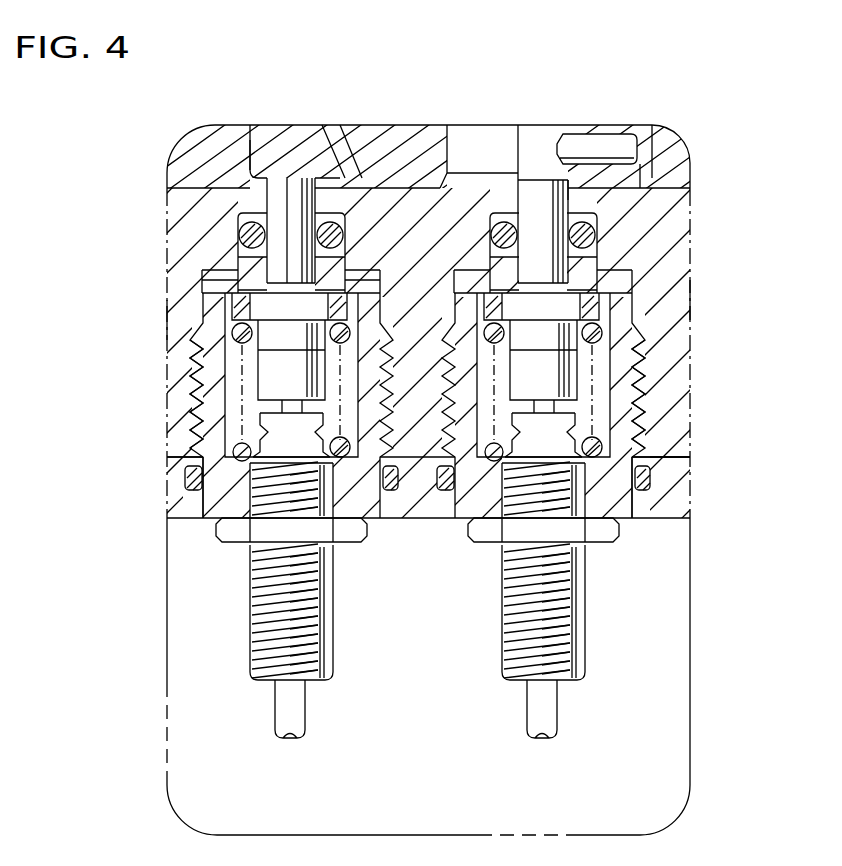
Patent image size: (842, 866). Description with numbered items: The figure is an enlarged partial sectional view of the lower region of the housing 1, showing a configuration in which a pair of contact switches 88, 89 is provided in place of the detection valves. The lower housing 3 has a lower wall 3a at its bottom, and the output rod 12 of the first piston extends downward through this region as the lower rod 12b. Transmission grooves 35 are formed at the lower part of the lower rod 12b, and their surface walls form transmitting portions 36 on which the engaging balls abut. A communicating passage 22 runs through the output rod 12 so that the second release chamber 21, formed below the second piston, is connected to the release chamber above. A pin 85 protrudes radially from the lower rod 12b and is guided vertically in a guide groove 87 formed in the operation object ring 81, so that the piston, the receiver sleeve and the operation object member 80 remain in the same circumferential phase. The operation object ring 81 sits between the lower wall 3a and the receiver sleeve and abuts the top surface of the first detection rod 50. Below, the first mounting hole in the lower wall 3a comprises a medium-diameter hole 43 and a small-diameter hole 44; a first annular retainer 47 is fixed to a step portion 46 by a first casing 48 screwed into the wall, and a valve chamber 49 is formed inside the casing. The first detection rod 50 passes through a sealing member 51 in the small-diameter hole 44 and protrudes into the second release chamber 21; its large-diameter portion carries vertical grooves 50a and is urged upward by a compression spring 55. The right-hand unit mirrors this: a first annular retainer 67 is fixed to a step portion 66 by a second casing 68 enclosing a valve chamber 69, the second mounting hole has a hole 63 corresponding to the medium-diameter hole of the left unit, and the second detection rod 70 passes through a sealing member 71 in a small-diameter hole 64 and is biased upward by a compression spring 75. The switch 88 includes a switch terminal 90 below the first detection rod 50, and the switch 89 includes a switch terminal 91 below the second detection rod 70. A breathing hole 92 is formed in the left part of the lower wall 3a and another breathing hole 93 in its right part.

The housing 1 is at (205, 112).
The lower housing 3 is at (458, 503).
The lower wall 3a is at (672, 485).
The output rod 12 is at (547, 113).
The lower rod 12b is at (517, 140).
The second release chamber 21 is at (342, 165).
The communicating passage 22 is at (470, 165).
The transmission grooves 35 is at (378, 145).
The transmitting portions 36 is at (368, 158).
The medium-diameter hole 43 is at (234, 234).
The small-diameter hole 44 is at (285, 183).
The step portion 46 is at (218, 268).
The first annular retainer 47 is at (223, 283).
The first casing 48 is at (207, 435).
The valve chamber 49 is at (259, 405).
The first detection rod 50 is at (285, 210).
The grooves 50a is at (240, 305).
The sealing member 51 is at (336, 233).
The compression spring 55 is at (190, 462).
The second O-ring 63 is at (618, 229).
The small-diameter hole 64 is at (590, 186).
The step portion 66 is at (618, 267).
The first annular retainer 67 is at (600, 288).
The second casing 68 is at (686, 470).
The valve chamber 69 is at (574, 405).
The second detection rod 70 is at (585, 205).
The sealing member 71 is at (593, 233).
The compression spring 75 is at (591, 471).
The operation object member 80 is at (262, 113).
The operation object ring 81 is at (287, 140).
The pin 85 is at (597, 140).
The guide groove 87 is at (650, 138).
The switch 88 is at (176, 414).
The switch 89 is at (689, 394).
The switch terminal 90 is at (255, 597).
The switch terminal 91 is at (607, 600).
The breathing hole 92 is at (170, 323).
The breathing hole 93 is at (658, 290).